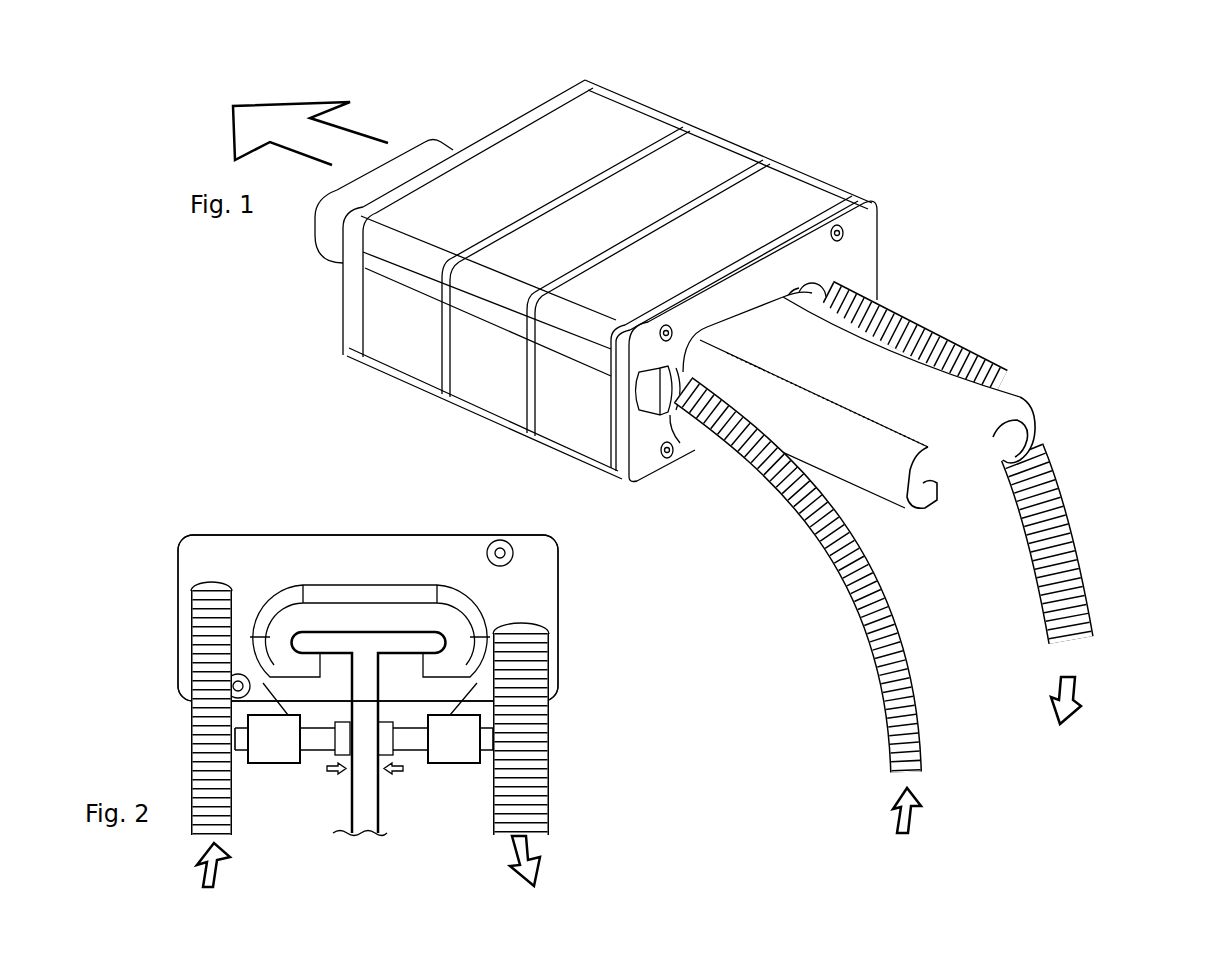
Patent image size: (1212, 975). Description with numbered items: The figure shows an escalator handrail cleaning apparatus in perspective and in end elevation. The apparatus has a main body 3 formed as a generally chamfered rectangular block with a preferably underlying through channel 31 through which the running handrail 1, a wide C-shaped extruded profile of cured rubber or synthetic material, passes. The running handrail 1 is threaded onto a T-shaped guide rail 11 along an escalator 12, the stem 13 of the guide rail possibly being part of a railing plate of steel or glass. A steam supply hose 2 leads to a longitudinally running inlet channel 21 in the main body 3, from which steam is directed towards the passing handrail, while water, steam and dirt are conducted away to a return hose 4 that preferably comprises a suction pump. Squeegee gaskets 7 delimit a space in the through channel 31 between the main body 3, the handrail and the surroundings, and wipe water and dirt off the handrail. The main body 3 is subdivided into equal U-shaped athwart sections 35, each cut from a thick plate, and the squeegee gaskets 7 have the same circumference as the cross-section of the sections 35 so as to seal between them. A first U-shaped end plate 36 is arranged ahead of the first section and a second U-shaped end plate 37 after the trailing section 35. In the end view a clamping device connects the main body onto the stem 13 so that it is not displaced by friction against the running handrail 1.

In FIG. 1, the running handrail 1 is at (993, 388).
In FIG. 2, the running handrail 1 is at (393, 613).
In FIG. 1, the steam supply hose 2 is at (903, 640).
In FIG. 2, the steam supply hose 2 is at (228, 792).
In FIG. 1, the main body 3 is at (783, 153).
In FIG. 2, the main body 3 is at (393, 613).
In FIG. 1, the return hose 4 is at (1073, 523).
In FIG. 2, the return hose 4 is at (525, 803).
In FIG. 1, the squeegee gasket 7 is at (365, 318).
In FIG. 2, the squeegee gasket 7 is at (287, 597).
In FIG. 2, the guide rail 11 is at (365, 817).
In FIG. 2, the escalator 12 is at (282, 743).
In FIG. 2, the stem 13 is at (365, 817).
In FIG. 1, the inlet channel 21 is at (383, 275).
In FIG. 1, the through channel 31 is at (767, 337).
In FIG. 1, the U-shaped athwart section 35 is at (643, 102).
In FIG. 1, the first U-shaped end plate 36 is at (853, 198).
In FIG. 2, the first U-shaped end plate 36 is at (548, 592).
In FIG. 1, the second U-shaped end plate 37 is at (585, 80).